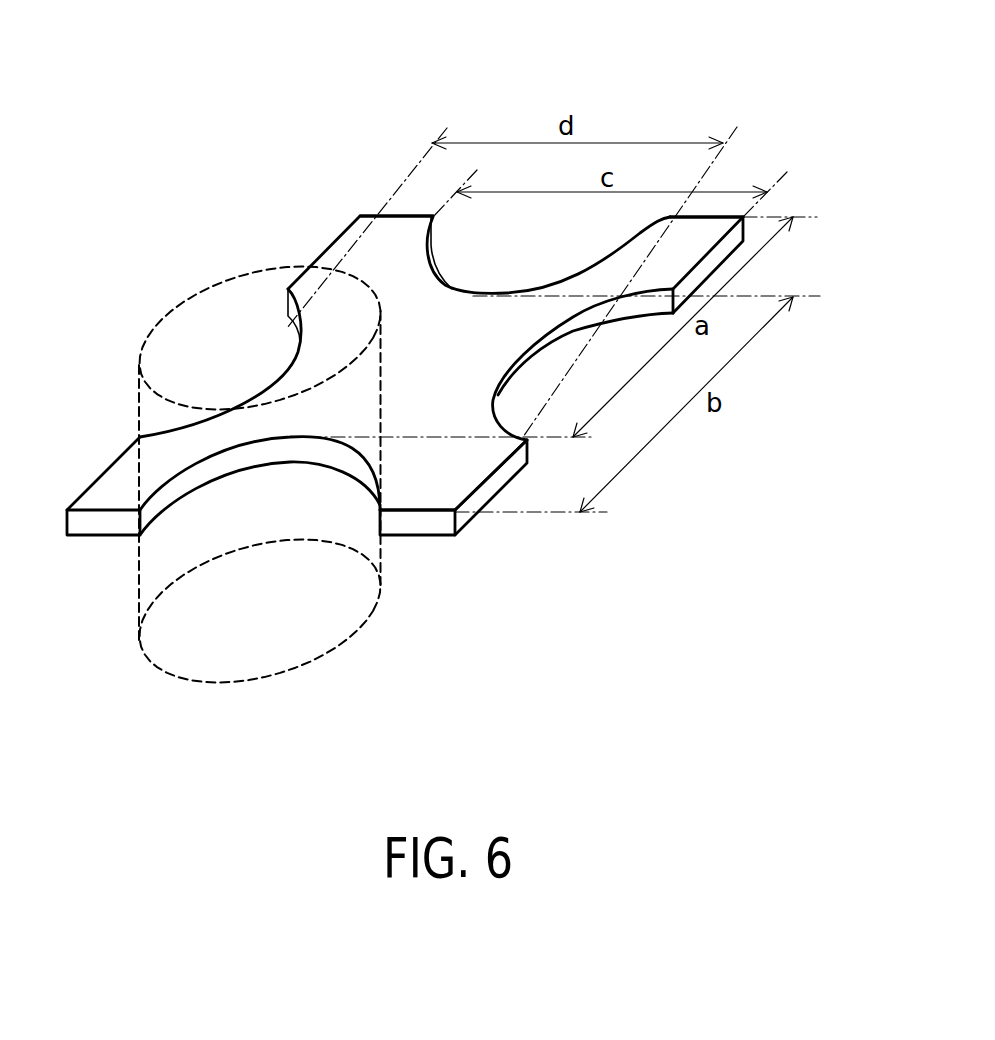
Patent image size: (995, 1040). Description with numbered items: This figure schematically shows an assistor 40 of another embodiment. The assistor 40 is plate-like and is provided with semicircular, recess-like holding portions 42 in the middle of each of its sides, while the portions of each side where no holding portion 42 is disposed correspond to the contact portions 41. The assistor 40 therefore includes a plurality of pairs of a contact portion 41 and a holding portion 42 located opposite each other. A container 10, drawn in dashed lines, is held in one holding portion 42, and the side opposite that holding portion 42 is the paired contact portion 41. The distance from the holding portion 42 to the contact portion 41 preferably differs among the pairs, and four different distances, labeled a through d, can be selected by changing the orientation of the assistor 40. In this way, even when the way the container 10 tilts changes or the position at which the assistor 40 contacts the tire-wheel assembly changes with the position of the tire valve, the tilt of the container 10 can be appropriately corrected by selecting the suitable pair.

The container 10 is at (297, 670).
The assistor 40 is at (373, 233).
The contact portion 41 is at (338, 238).
The holding portion 42 is at (300, 438).